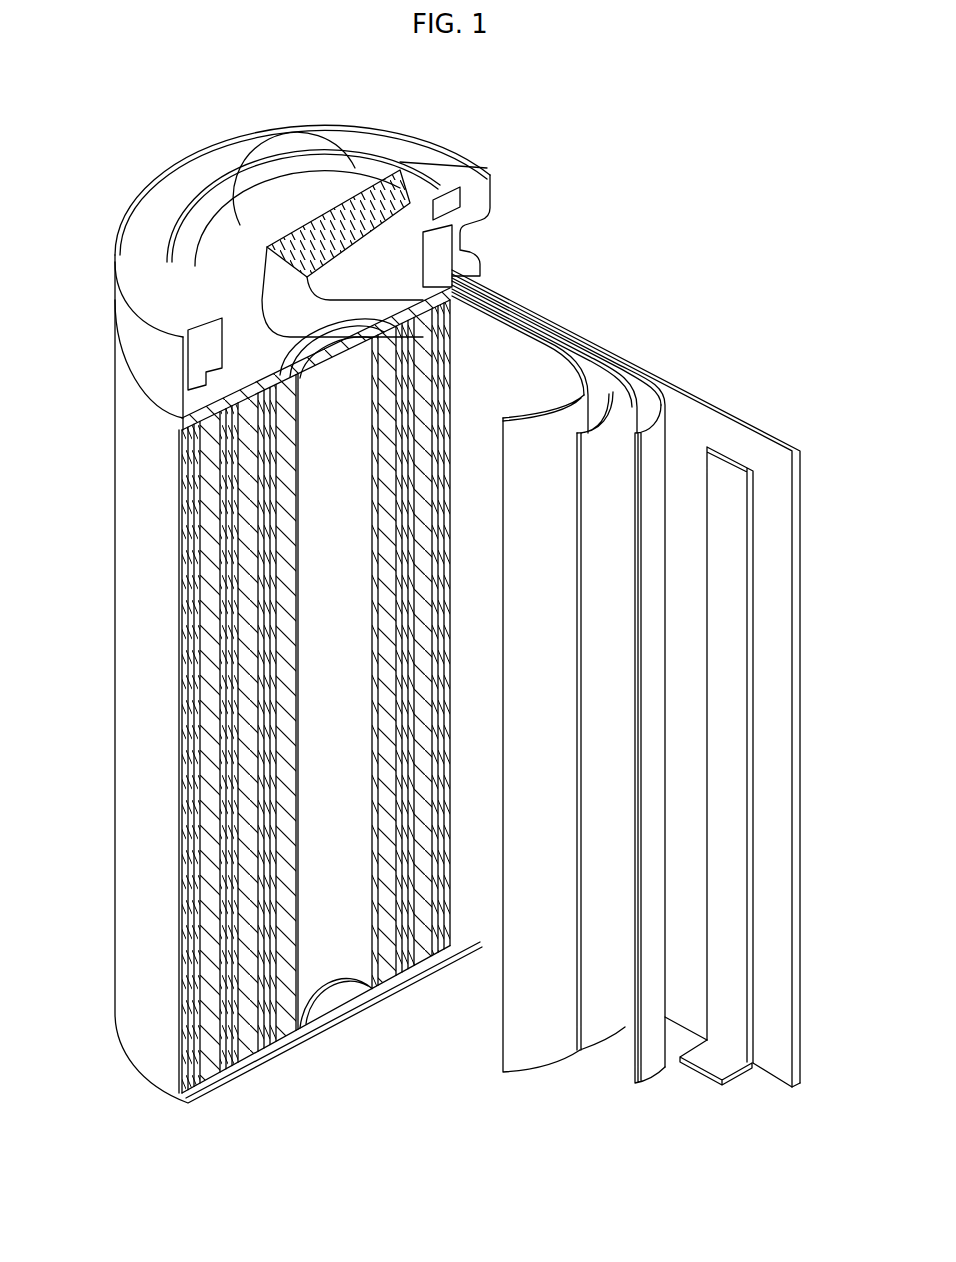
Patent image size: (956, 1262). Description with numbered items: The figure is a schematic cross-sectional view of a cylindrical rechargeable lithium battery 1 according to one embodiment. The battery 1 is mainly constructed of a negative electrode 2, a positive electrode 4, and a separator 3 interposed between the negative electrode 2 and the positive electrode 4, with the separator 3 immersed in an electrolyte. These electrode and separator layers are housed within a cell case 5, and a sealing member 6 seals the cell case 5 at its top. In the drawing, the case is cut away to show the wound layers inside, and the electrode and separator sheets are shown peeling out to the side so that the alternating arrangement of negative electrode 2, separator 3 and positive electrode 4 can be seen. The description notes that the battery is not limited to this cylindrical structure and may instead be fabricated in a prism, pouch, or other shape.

The rechargeable lithium battery 1 is at (742, 220).
The negative electrode 2 is at (797, 708).
The separator 3 is at (603, 346).
The positive electrode 4 is at (647, 361).
The cell case 5 is at (115, 703).
The sealing member 6 is at (310, 172).